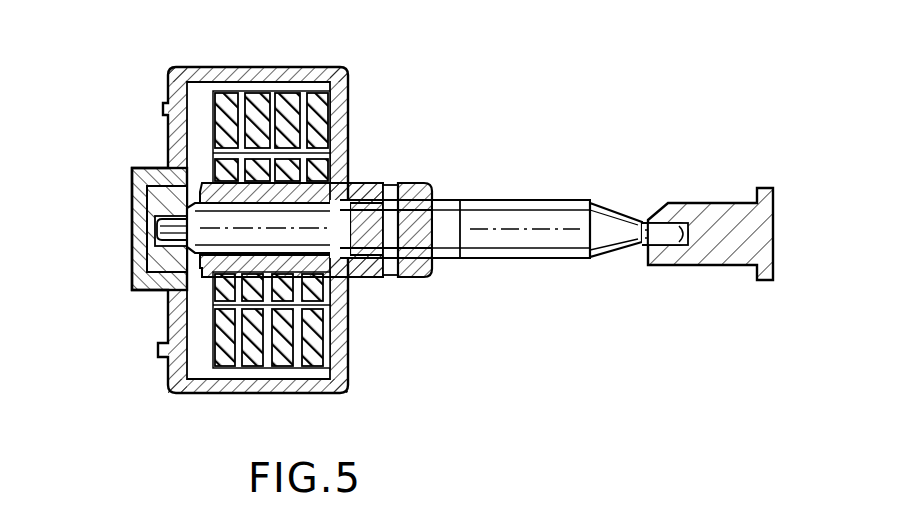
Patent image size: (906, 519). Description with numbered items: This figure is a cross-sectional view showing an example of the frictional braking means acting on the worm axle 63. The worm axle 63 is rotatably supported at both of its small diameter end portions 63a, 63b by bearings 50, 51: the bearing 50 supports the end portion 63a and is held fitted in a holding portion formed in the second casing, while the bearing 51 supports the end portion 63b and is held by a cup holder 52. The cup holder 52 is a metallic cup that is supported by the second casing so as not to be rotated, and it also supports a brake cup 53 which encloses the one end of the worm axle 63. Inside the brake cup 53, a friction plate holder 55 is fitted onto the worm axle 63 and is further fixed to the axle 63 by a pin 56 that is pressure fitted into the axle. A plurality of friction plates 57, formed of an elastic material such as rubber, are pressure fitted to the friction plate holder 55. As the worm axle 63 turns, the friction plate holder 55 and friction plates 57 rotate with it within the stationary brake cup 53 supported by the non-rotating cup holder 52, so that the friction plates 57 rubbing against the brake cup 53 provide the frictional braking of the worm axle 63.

The bearing 50 is at (705, 206).
The bearing 51 is at (140, 226).
The cup holder 52 is at (155, 168).
The brake cup 53 is at (267, 67).
The friction plate holder 55 is at (372, 277).
The pin 56 is at (390, 190).
The friction plates 57 is at (250, 393).
The worm axle 63 is at (537, 258).
The small diameter end portion 63a is at (655, 236).
The small diameter end portion 63b is at (142, 250).